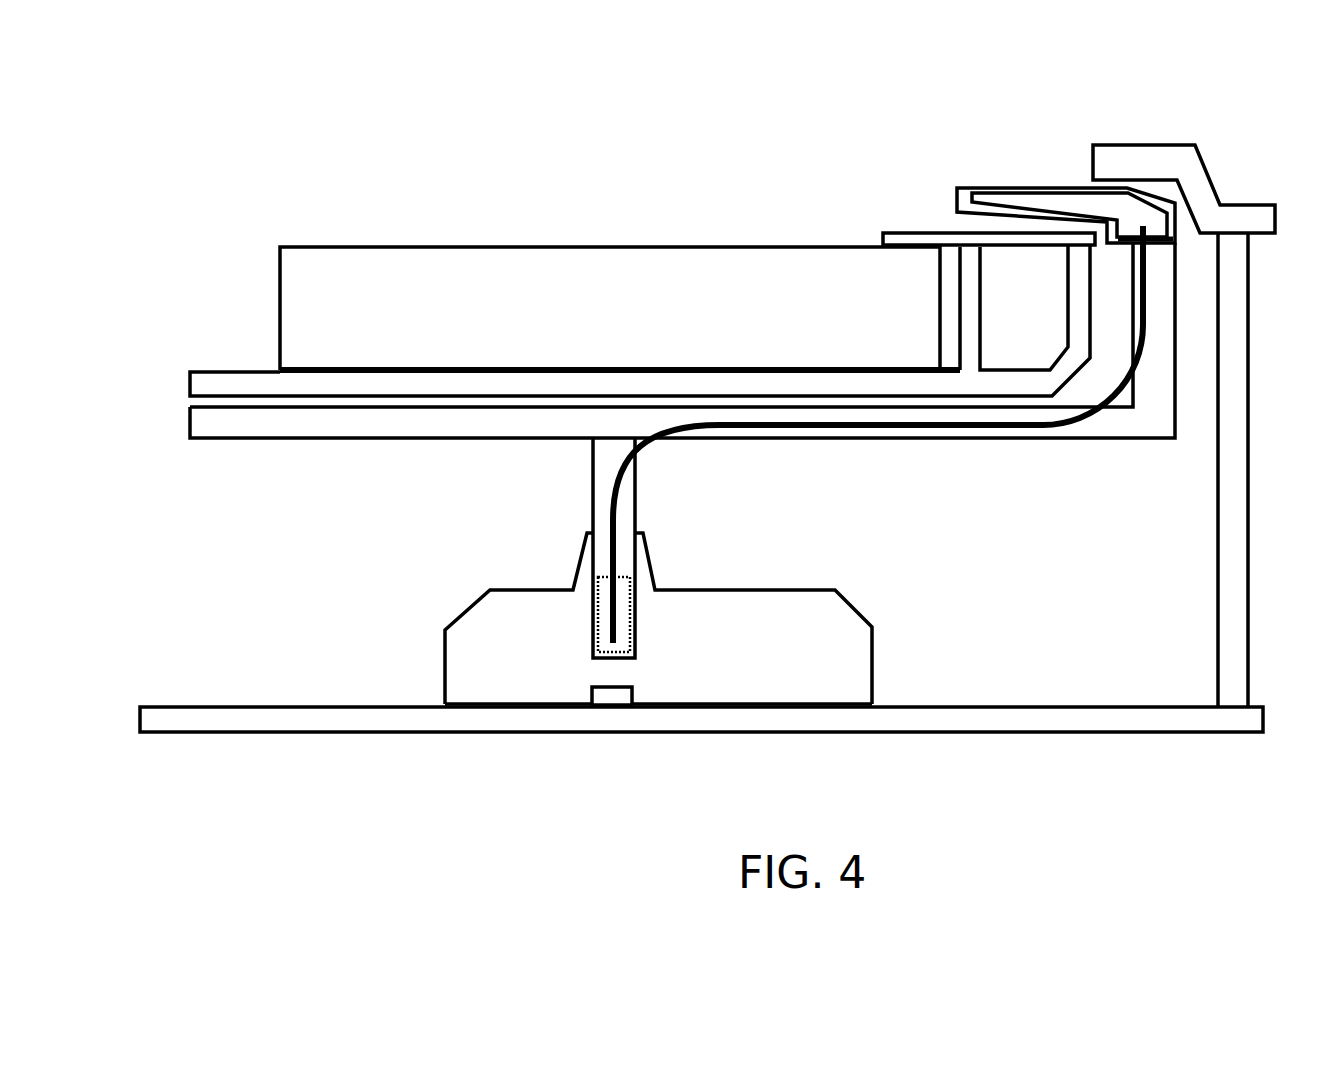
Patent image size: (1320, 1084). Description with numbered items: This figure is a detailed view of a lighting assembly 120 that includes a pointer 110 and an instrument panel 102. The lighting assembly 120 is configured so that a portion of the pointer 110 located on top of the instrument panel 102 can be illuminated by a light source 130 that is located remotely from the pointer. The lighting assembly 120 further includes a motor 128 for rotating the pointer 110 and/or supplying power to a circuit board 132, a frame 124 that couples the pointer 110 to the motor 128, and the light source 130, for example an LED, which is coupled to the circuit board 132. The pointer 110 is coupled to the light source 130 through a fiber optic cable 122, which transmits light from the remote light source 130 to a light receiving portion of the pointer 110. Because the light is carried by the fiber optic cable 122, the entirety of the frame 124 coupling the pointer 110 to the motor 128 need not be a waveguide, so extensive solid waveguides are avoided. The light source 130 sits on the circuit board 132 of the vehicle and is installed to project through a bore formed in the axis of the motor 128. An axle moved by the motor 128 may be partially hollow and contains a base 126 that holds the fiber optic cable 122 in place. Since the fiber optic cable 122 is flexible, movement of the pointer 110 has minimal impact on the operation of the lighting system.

The lighting assembly 120 is at (152, 255).
The pointer 110 is at (1006, 176).
The instrument panel 102 is at (466, 266).
The frame 124 is at (437, 420).
The fiber optic cable 122 is at (917, 425).
The base 126 is at (622, 593).
The motor 128 is at (837, 620).
The light source 130 is at (612, 699).
The circuit board 132 is at (1053, 717).